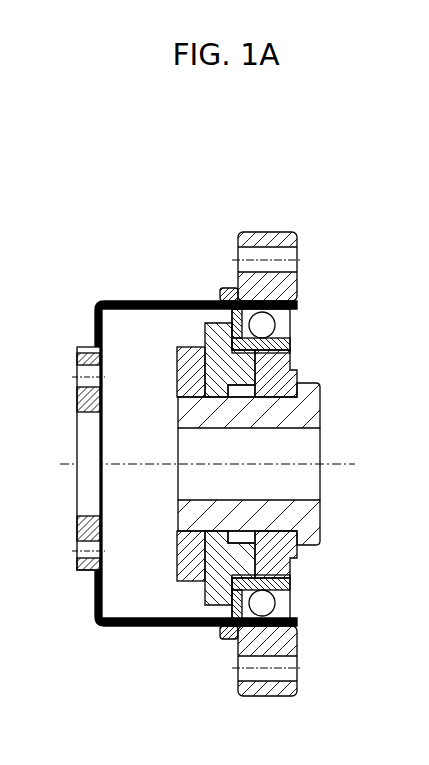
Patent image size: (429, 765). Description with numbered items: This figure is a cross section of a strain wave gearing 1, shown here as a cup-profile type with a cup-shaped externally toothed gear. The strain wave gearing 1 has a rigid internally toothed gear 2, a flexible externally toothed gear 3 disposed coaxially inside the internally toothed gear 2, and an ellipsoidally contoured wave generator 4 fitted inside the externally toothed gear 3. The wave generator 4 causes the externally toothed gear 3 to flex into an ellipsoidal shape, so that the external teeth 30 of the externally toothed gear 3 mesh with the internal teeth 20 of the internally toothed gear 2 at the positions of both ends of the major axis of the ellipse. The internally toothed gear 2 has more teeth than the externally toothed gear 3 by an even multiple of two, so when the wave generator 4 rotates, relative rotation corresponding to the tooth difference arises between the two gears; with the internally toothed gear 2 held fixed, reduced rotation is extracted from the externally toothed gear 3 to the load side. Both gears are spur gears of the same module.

The strain wave gearing 1 is at (111, 265).
The rigid internally toothed gear 2 is at (304, 283).
The flexible externally toothed gear 3 is at (304, 310).
The wave generator 4 is at (304, 362).
The internal teeth 20 is at (233, 320).
The external teeth 30 is at (250, 287).